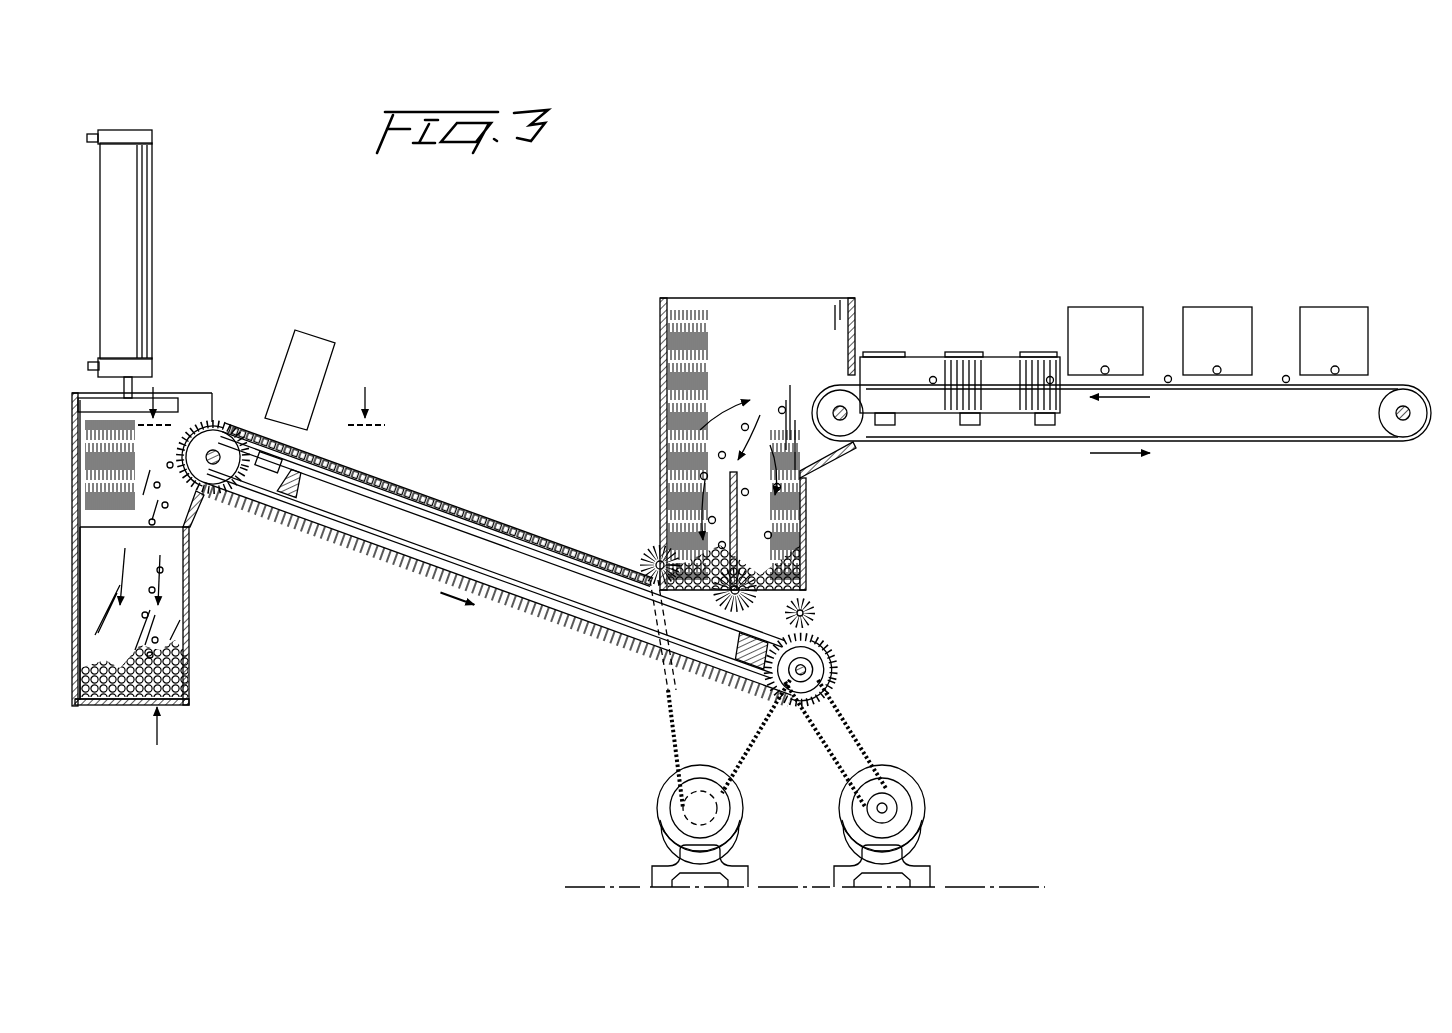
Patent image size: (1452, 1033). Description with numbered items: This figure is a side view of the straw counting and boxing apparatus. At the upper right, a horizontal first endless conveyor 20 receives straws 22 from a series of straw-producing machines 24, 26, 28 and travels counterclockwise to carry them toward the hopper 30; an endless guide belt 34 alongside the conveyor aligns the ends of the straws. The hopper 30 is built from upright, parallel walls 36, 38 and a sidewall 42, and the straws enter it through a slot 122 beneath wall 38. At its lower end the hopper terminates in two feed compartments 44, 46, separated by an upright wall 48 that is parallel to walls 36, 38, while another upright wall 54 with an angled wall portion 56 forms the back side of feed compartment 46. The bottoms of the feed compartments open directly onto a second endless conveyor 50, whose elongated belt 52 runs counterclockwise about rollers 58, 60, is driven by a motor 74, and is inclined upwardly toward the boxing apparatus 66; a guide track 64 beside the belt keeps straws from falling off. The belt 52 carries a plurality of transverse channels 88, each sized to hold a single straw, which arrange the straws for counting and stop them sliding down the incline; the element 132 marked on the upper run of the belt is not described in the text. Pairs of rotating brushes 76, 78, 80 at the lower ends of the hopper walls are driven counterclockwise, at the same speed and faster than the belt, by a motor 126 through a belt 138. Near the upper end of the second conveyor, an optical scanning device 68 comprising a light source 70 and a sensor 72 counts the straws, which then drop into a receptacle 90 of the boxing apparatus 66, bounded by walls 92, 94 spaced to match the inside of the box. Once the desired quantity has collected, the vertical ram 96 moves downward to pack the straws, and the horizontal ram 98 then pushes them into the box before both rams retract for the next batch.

The first endless conveyor 20 is at (1308, 445).
The straws 22 is at (190, 700).
The straw-producing machine 24 is at (1100, 316).
The straw-producing machine 26 is at (1222, 322).
The straw-producing machine 28 is at (1343, 312).
The hopper 30 is at (870, 328).
The endless guide belt 34 is at (960, 350).
The upright wall 36 is at (658, 345).
The upright wall 38 is at (865, 298).
The sidewall 42 is at (765, 298).
The feed compartment 44 is at (730, 495).
The feed compartment 46 is at (795, 528).
The upright wall 48 is at (690, 490).
The second endless conveyor 50 is at (850, 655).
The belt 52 is at (520, 600).
The upright wall 54 is at (810, 558).
The angled wall portion 56 is at (850, 448).
The roller 58 is at (218, 445).
The roller 60 is at (808, 668).
The guide track 64 is at (348, 485).
The boxing apparatus 66 is at (74, 384).
The optical scanning device 68 is at (348, 338).
The light source 70 is at (297, 352).
The sensor 72 is at (268, 470).
The motor 74 is at (920, 800).
The pair of rotating brushes 76 is at (652, 575).
The pair of rotating brushes 78 is at (690, 612).
The pair of rotating brushes 80 is at (812, 612).
The transverse channels 88 is at (392, 480).
The receptacle 90 is at (160, 748).
The wall 92 is at (108, 705).
The wall 94 is at (190, 650).
The vertical ram 96 is at (152, 282).
The horizontal ram 98 is at (160, 597).
The slot 122 is at (860, 375).
The motor 126 is at (662, 818).
The conveyor flight 132 is at (458, 500).
The belt 138 is at (665, 705).